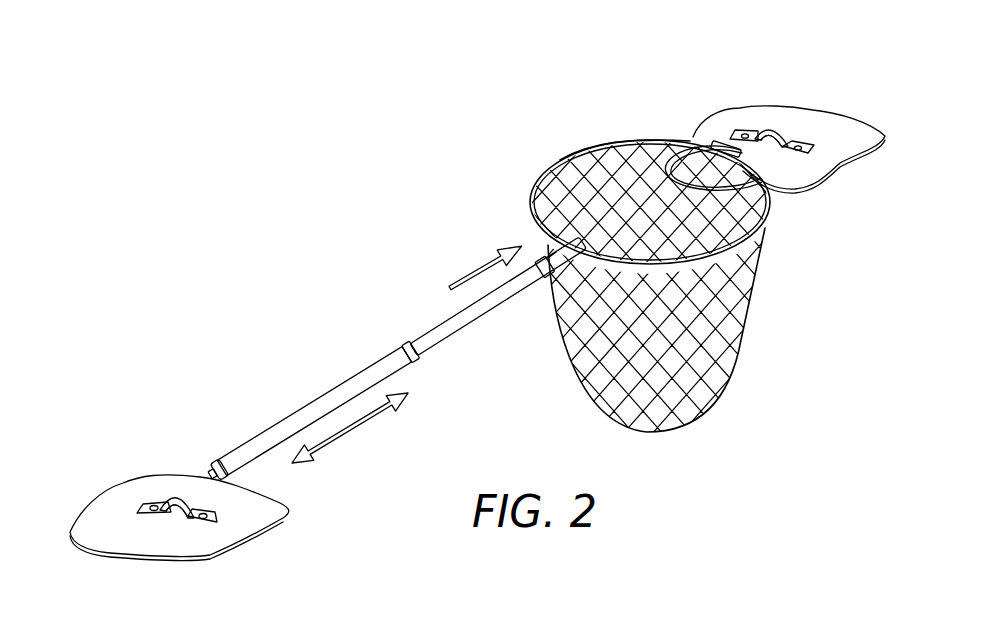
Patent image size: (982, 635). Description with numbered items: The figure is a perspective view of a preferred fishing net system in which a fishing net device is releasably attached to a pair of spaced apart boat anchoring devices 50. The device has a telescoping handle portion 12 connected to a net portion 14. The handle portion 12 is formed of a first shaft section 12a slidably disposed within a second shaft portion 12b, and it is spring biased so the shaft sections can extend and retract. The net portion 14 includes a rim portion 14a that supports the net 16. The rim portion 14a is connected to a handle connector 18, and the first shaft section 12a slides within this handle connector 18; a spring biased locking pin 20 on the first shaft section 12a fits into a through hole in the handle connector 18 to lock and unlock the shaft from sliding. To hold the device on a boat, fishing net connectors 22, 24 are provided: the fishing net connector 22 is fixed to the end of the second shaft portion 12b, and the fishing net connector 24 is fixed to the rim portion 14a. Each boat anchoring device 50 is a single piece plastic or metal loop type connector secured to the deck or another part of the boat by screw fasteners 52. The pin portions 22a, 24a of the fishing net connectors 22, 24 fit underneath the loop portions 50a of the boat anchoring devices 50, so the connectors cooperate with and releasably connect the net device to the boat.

The handle portion 12 is at (395, 334).
The first shaft section 12a is at (430, 330).
The second shaft portion 12b is at (317, 400).
The net portion 14 is at (538, 168).
The rim portion 14a is at (612, 140).
The net 16 is at (743, 358).
The handle connector 18 is at (538, 245).
The locking pin 20 is at (558, 303).
The fishing net connector 22 is at (217, 474).
The pin portion 22a is at (287, 513).
The fishing net connector 24 is at (713, 139).
The pin portion 24a is at (730, 147).
The boat anchoring device 50 is at (770, 130).
The loop portion 50a is at (784, 130).
The screw fastener 52 is at (750, 132).